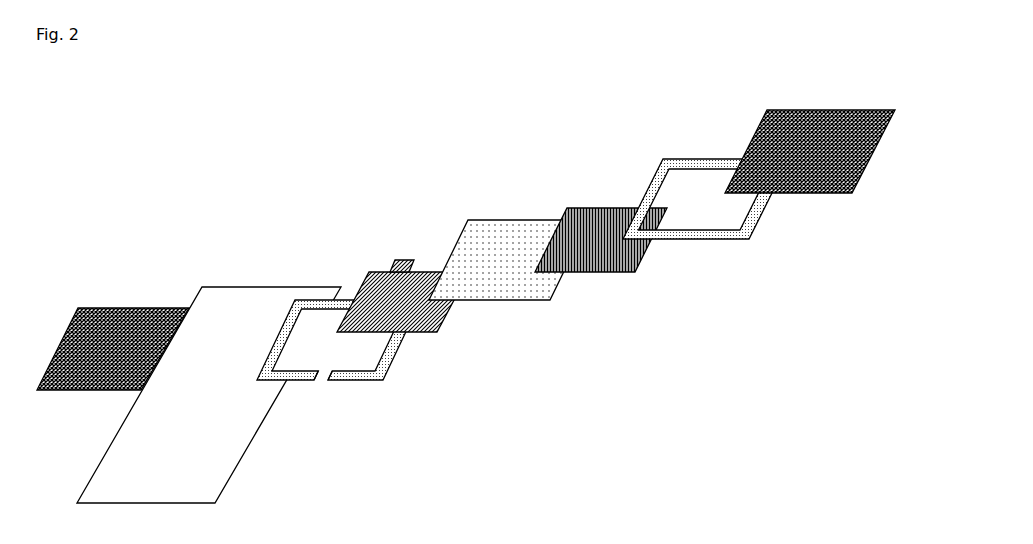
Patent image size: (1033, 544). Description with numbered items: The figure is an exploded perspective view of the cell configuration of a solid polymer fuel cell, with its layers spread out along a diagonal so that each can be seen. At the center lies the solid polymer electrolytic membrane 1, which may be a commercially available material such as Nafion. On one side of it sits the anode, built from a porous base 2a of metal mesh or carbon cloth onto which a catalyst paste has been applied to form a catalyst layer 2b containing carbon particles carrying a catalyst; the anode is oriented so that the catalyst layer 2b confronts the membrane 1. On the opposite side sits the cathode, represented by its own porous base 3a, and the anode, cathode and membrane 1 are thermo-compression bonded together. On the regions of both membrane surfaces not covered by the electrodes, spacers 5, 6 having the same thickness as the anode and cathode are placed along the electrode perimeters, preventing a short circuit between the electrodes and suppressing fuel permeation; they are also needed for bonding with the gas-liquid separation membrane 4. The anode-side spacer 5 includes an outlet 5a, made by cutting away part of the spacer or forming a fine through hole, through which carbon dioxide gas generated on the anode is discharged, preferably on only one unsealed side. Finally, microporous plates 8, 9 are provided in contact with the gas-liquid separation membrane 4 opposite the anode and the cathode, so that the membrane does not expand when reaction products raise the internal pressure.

The solid polymer electrolytic membrane 1 is at (498, 228).
The porous base 2a is at (407, 259).
The catalyst layer 2b is at (417, 333).
The porous base 3a is at (590, 208).
The gas-liquid separation membrane 4 is at (240, 303).
The spacer 5 is at (313, 298).
The outlet 5a is at (313, 381).
The spacer 6 is at (688, 163).
The microporous plate 8 is at (120, 306).
The microporous plate 9 is at (810, 112).